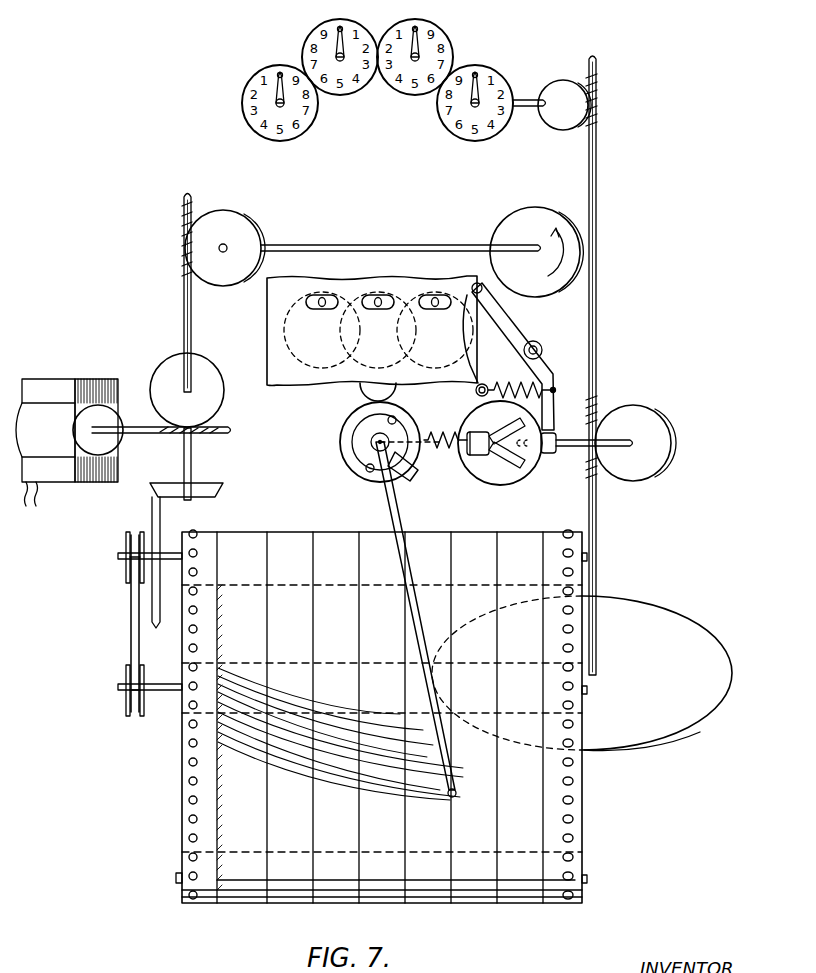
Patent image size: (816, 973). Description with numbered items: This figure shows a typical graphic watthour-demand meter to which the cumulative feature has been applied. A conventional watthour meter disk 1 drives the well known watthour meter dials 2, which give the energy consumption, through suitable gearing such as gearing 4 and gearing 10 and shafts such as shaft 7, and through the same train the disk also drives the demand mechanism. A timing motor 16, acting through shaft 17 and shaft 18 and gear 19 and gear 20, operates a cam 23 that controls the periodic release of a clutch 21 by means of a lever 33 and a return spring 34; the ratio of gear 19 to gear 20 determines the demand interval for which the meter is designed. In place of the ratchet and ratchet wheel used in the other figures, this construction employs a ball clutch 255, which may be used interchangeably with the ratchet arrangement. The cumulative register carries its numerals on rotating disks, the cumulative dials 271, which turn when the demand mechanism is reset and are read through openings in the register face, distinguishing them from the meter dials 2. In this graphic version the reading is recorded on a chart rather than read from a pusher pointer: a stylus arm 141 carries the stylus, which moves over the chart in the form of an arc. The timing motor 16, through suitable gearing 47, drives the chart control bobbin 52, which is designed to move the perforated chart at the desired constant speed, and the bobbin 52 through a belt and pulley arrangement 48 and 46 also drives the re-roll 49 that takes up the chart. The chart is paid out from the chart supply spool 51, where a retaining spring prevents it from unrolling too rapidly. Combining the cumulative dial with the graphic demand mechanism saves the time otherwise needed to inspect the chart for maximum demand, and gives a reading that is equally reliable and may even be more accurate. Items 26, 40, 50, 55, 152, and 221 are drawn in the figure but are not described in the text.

The watthour meter disk 1 is at (648, 606).
The watthour meter dials 2 is at (393, 91).
The gearing 4 is at (598, 104).
The shaft 7 is at (597, 527).
The gearing 10 is at (603, 401).
The timing motor 16 is at (70, 378).
The shaft 17 is at (125, 427).
The shaft 18 is at (185, 325).
The gear 19 is at (216, 428).
The gear 20 is at (182, 242).
The clutch 21 is at (505, 484).
The cam 23 is at (512, 223).
The roller 26 is at (362, 388).
The lever 33 is at (515, 326).
The return spring 34 is at (502, 387).
The motor leads 40 is at (28, 508).
The belt and pulley arrangement 46 is at (131, 613).
The gearing 47 is at (160, 497).
The belt and pulley arrangement 48 is at (127, 544).
The re-roll 49 is at (127, 704).
The shaft 50 is at (169, 691).
The chart supply spool 51 is at (176, 878).
The chart control bobbin 52 is at (173, 560).
The recording chart 55 is at (585, 819).
The stylus arm 141 is at (388, 506).
The cam 152 is at (409, 479).
The spring 221 is at (442, 436).
The ball clutch 255 is at (343, 452).
The cumulative dials 271 is at (396, 298).